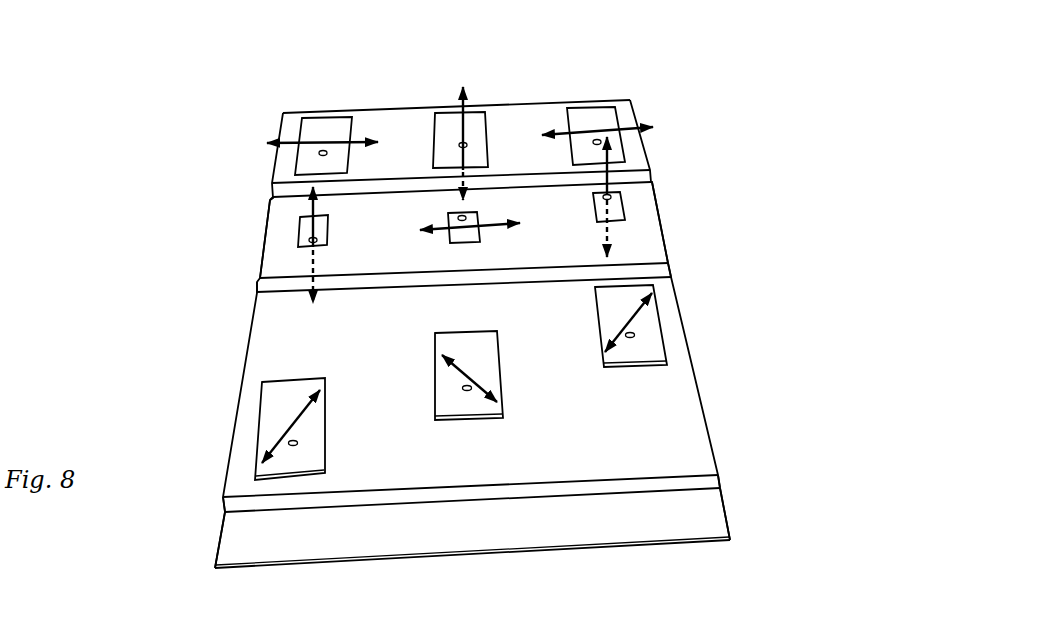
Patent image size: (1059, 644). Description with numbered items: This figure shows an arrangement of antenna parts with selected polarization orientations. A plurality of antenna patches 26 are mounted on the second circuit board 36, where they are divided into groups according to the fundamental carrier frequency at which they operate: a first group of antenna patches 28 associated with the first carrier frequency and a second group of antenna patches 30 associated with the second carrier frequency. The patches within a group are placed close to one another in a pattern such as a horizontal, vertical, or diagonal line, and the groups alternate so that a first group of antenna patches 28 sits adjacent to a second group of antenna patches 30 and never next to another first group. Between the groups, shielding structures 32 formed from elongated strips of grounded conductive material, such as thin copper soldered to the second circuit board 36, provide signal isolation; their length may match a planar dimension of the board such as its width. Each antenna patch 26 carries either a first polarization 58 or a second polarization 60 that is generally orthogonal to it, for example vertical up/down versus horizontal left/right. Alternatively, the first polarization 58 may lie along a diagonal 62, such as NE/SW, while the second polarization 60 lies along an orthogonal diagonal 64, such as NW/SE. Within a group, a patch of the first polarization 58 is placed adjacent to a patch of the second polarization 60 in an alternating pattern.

The antenna patches 26 is at (522, 84).
The first group of antenna patches 28 is at (281, 125).
The second group of antenna patches 30 is at (266, 230).
The shielding structure 32 is at (643, 177).
The second circuit board 36 is at (642, 533).
The first polarization 58 is at (457, 100).
The second polarization 60 is at (367, 140).
The diagonal 62 is at (608, 338).
The orthogonal diagonal 64 is at (450, 365).